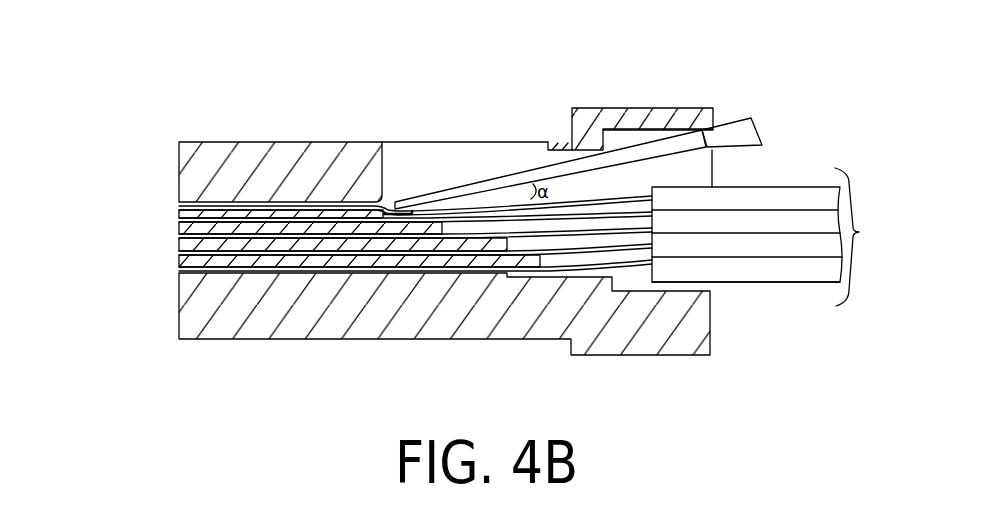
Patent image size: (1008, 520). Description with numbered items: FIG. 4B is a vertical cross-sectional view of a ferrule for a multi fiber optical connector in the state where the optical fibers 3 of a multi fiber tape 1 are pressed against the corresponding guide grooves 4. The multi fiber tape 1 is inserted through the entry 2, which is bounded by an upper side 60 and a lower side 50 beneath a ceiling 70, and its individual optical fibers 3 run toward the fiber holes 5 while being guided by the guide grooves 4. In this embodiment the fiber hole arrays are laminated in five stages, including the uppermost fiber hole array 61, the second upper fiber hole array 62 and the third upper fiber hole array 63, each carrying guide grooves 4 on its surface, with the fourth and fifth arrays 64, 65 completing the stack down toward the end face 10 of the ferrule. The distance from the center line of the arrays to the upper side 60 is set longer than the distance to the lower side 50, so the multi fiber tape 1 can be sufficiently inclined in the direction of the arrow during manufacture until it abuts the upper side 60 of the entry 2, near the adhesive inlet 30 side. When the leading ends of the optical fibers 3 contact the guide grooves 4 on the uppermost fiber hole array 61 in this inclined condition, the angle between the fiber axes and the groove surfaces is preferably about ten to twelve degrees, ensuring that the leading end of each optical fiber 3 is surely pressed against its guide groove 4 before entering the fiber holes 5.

The multi fiber tape 1 is at (757, 50).
The entry 2 is at (712, 285).
The optical fibers 3 is at (468, 191).
The guide grooves 4 is at (390, 208).
The fiber holes 5 is at (361, 262).
The uppermost fiber hole array 61 is at (178, 205).
The second upper fiber hole array 62 is at (178, 221).
The third upper fiber hole array 63 is at (178, 237).
The fourth optical fiber 64 is at (178, 254).
The fifth optical fiber 65 is at (178, 271).
The end face 10 is at (178, 165).
The adhesive inlet 30 is at (517, 150).
The lower side 50 is at (712, 295).
The upper side 60 is at (720, 126).
The ceiling 70 is at (626, 108).